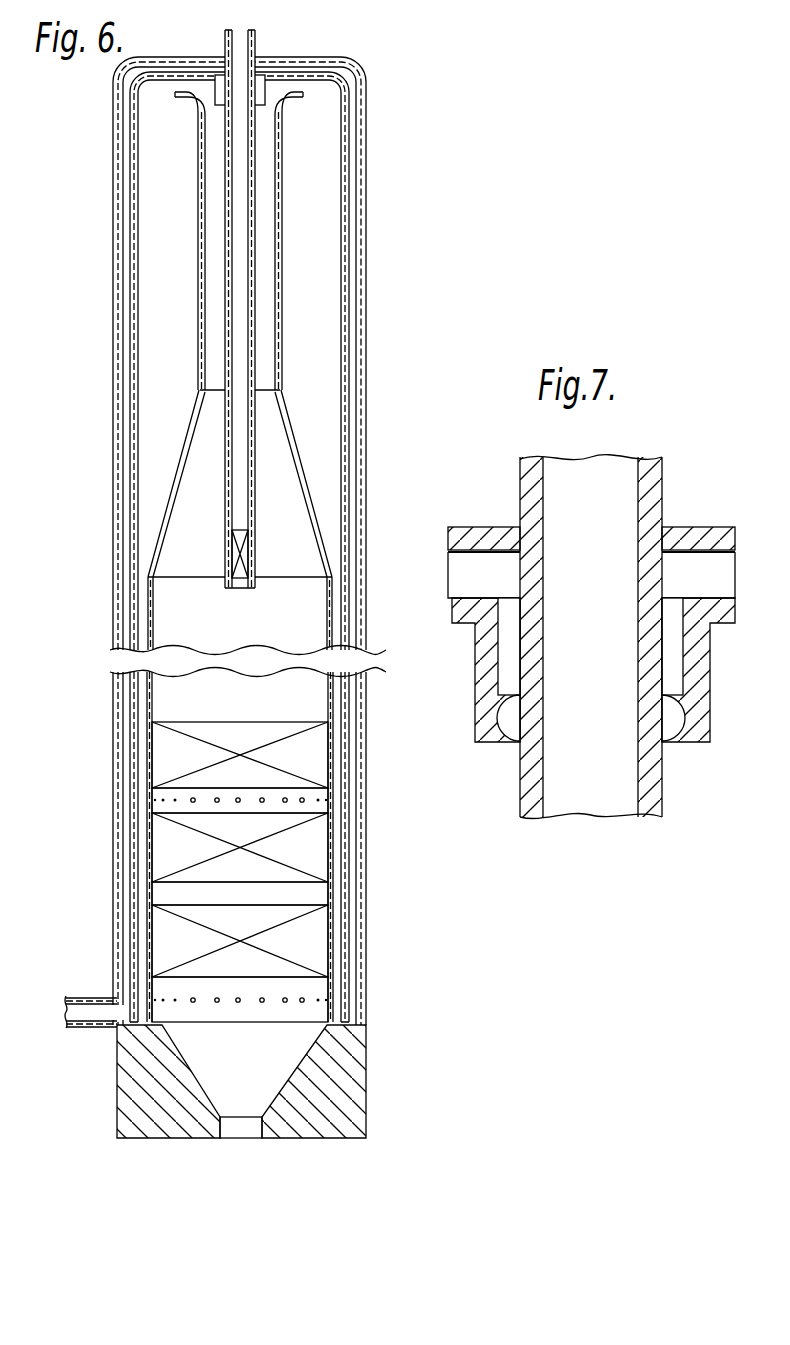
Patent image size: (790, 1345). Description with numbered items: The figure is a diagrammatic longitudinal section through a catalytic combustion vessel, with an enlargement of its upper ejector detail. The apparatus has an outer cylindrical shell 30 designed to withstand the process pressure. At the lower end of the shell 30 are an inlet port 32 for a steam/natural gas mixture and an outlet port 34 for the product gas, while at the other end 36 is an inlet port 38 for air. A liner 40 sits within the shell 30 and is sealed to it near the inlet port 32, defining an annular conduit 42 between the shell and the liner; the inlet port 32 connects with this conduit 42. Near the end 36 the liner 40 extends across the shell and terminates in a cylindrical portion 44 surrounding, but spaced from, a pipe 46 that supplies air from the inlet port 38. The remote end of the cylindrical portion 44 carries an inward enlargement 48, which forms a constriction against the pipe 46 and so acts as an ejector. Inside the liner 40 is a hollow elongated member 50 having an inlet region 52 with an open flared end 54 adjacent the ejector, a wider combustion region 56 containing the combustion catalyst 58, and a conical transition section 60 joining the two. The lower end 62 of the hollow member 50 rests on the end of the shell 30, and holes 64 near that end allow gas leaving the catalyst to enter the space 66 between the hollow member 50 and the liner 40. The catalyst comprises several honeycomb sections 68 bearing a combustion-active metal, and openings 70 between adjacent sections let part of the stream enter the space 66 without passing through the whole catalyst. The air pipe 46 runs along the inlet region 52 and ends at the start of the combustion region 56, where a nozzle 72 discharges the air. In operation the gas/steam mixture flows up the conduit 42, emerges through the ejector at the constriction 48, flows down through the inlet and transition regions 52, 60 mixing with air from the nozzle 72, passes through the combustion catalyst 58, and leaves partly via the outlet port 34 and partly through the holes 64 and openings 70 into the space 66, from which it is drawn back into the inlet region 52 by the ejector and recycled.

In FIG. 6, the outer cylindrical shell 30 is at (365, 403).
In FIG. 6, the inlet port 32 is at (100, 1017).
In FIG. 6, the outlet port 34 is at (233, 1133).
In FIG. 6, the other end of the shell 36 is at (327, 57).
In FIG. 7, the other end of the shell 36 is at (708, 525).
In FIG. 6, the inlet port for air 38 is at (243, 32).
In FIG. 7, the inlet port for air 38 is at (663, 472).
In FIG. 6, the liner 40 is at (140, 878).
In FIG. 6, the annular conduit 42 is at (125, 447).
In FIG. 6, the cylindrical portion 44 is at (217, 92).
In FIG. 7, the cylindrical portion 44 is at (706, 652).
In FIG. 6, the pipe 46 is at (257, 172).
In FIG. 7, the pipe 46 is at (657, 787).
In FIG. 7, the inward enlargement 48 is at (517, 742).
In FIG. 6, the hollow elongated member 50 is at (280, 316).
In FIG. 6, the inlet region 52 is at (267, 222).
In FIG. 6, the open flared end 54 is at (183, 100).
In FIG. 6, the combustion region 56 is at (177, 610).
In FIG. 6, the combustion catalyst 58 is at (195, 712).
In FIG. 6, the conical transition section 60 is at (277, 427).
In FIG. 6, the lower end 62 is at (332, 1020).
In FIG. 6, the holes 64 is at (175, 998).
In FIG. 6, the space 66 is at (338, 950).
In FIG. 6, the honeycomb sections 68 is at (163, 748).
In FIG. 6, the openings 70 is at (175, 798).
In FIG. 6, the nozzle 72 is at (247, 552).